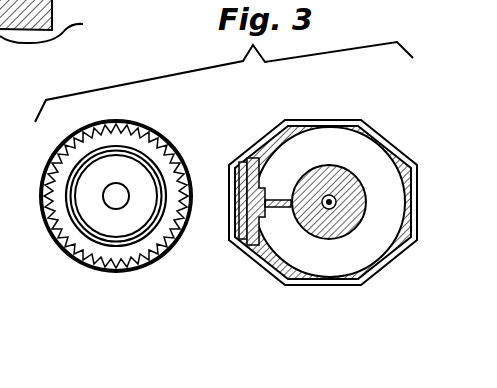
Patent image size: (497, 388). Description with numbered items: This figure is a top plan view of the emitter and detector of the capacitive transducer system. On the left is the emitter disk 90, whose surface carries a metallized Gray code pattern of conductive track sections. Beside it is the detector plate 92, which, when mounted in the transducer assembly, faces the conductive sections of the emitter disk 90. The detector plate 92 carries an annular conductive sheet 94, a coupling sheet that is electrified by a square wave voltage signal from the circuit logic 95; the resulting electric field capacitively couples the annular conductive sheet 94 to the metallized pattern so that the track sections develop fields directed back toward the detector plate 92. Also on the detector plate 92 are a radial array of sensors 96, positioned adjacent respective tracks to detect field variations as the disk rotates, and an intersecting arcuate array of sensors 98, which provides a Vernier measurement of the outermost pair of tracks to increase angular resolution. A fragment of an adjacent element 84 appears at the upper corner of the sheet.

The housing fragment 84 is at (59, 21).
The emitter disk 90 is at (131, 273).
The detector plate 92 is at (335, 284).
The annular conductive sheet 94 is at (337, 152).
The circuit logic 95 is at (243, 163).
The radial array of sensors 96 is at (277, 197).
The arcuate array of sensors 98 is at (263, 223).